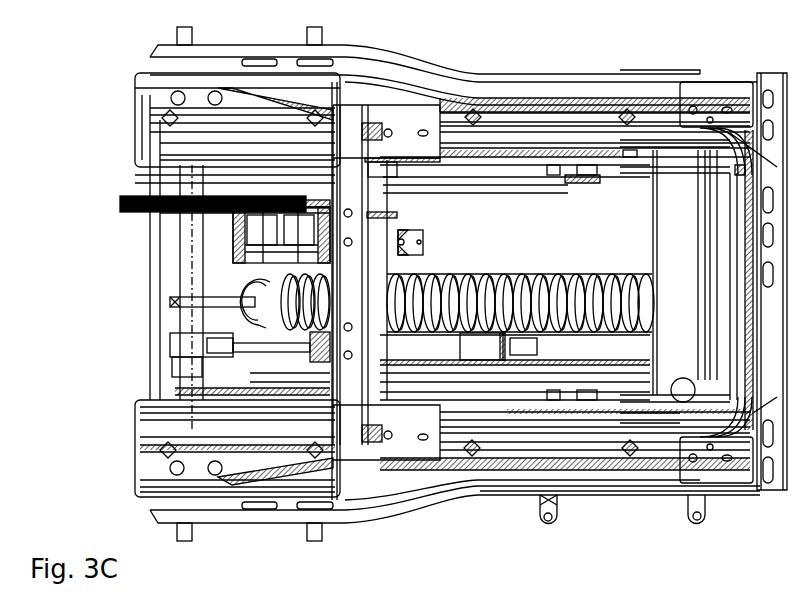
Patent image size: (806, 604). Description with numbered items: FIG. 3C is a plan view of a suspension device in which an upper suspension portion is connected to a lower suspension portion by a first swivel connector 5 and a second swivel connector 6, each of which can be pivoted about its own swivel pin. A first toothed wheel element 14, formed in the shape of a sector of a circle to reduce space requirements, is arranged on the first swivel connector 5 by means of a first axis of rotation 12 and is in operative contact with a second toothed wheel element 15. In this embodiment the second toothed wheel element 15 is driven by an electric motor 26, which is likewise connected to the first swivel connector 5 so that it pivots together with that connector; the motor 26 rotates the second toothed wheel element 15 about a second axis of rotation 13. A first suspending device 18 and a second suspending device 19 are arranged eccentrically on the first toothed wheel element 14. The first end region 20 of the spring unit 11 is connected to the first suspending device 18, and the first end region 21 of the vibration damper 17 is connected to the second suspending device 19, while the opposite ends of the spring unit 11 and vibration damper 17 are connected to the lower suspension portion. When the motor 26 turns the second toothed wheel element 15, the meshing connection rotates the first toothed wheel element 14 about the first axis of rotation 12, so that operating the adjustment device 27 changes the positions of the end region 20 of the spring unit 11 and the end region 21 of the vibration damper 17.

The first swivel connector 5 is at (270, 398).
The second swivel connector 6 is at (642, 395).
The spring unit 11 is at (523, 288).
The first axis of rotation 12 is at (192, 238).
The second axis of rotation 13 is at (287, 175).
The first toothed wheel element 14 is at (124, 199).
The second toothed wheel element 15 is at (303, 207).
The vibration damper 17 is at (447, 350).
The first suspending device 18 is at (170, 300).
The second suspending device 19 is at (170, 335).
The first end region of the spring unit 20 is at (250, 286).
The first end region of the vibration damper 21 is at (246, 348).
The electric motor 26 is at (398, 225).
The adjustment device 27 is at (56, 298).